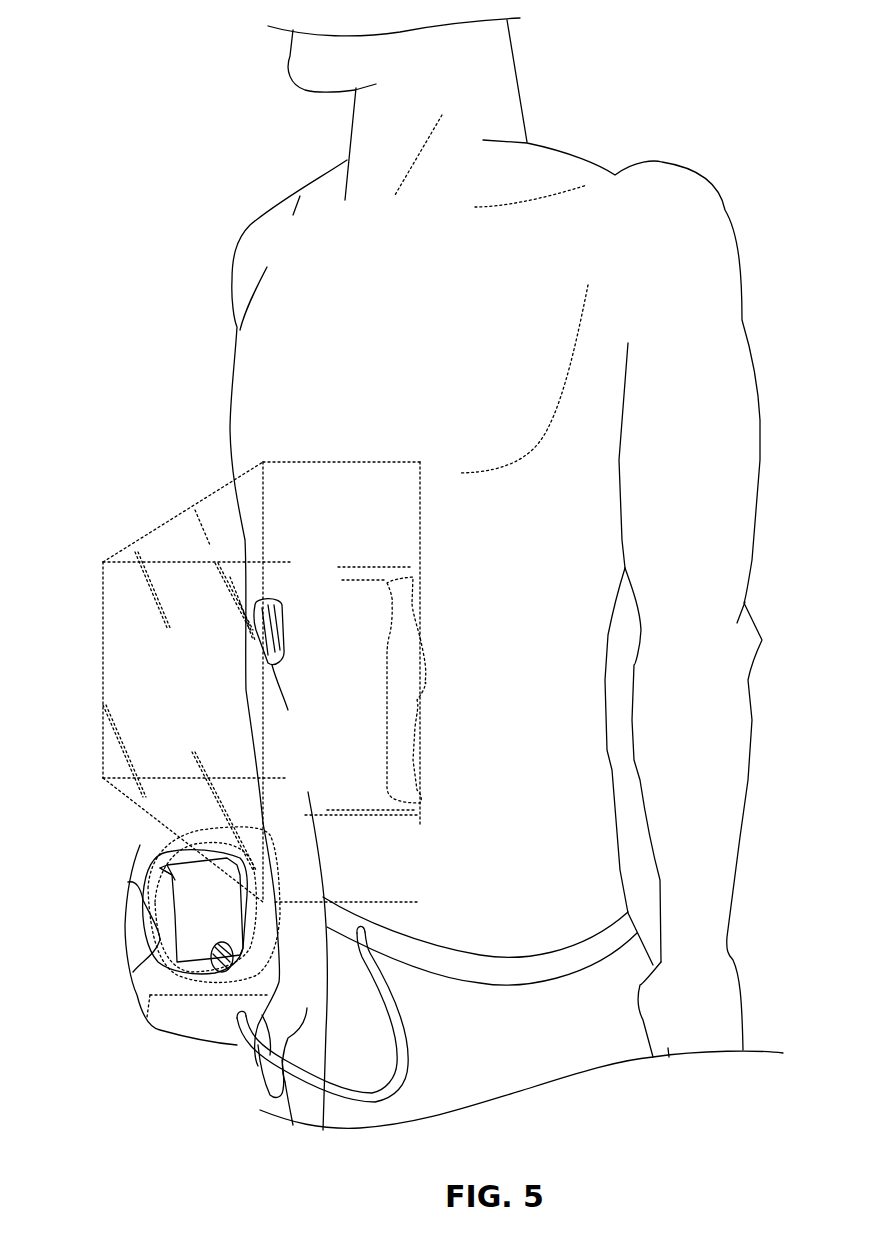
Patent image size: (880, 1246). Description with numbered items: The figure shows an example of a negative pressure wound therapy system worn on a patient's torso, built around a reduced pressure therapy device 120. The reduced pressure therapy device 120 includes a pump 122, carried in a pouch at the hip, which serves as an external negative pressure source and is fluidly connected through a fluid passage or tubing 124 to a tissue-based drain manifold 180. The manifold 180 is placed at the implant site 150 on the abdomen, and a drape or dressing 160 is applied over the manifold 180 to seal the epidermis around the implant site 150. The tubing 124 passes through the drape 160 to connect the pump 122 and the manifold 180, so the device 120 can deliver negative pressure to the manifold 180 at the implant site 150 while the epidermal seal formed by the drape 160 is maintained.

The reduced pressure therapy device 120 is at (230, 1093).
The pump 122 is at (118, 927).
The fluid passage or tubing 124 is at (410, 1042).
The implant site 150 is at (420, 727).
The drape or dressing 160 is at (212, 500).
The tissue-based drain manifold 180 is at (262, 600).